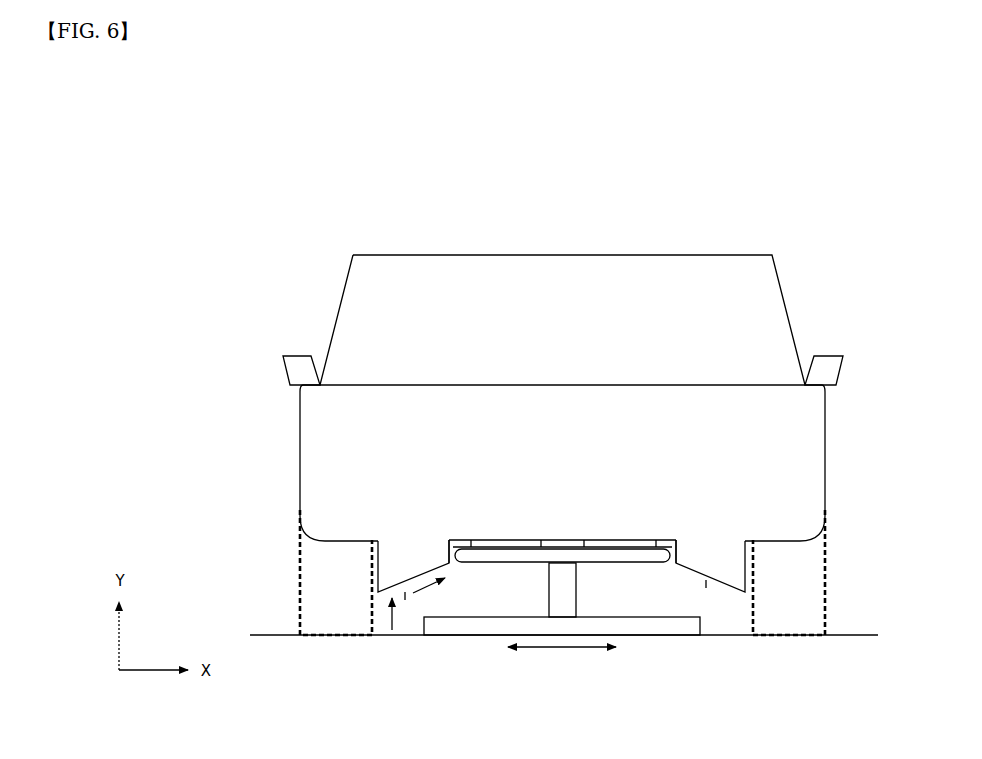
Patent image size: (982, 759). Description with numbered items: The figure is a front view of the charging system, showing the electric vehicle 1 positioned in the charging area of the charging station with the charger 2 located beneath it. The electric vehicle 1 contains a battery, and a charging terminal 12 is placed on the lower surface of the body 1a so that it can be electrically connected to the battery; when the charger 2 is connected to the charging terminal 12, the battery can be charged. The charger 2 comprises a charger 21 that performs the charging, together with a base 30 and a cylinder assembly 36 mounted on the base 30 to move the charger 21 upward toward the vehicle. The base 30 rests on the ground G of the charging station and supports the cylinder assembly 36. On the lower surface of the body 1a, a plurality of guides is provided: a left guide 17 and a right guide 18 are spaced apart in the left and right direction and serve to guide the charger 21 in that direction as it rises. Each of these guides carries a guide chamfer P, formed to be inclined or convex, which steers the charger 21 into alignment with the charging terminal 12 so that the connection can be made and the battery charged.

The electric vehicle 1 is at (778, 209).
The body 1a is at (456, 536).
The charging terminal 12 is at (495, 540).
The right guide 18 is at (395, 561).
The left guide 17 is at (730, 561).
The charger 2 is at (720, 613).
The charger 21 is at (640, 558).
The cylinder assembly 36 is at (586, 590).
The base 30 is at (452, 623).
The ground G is at (280, 637).
The guide chamfer P is at (405, 593).